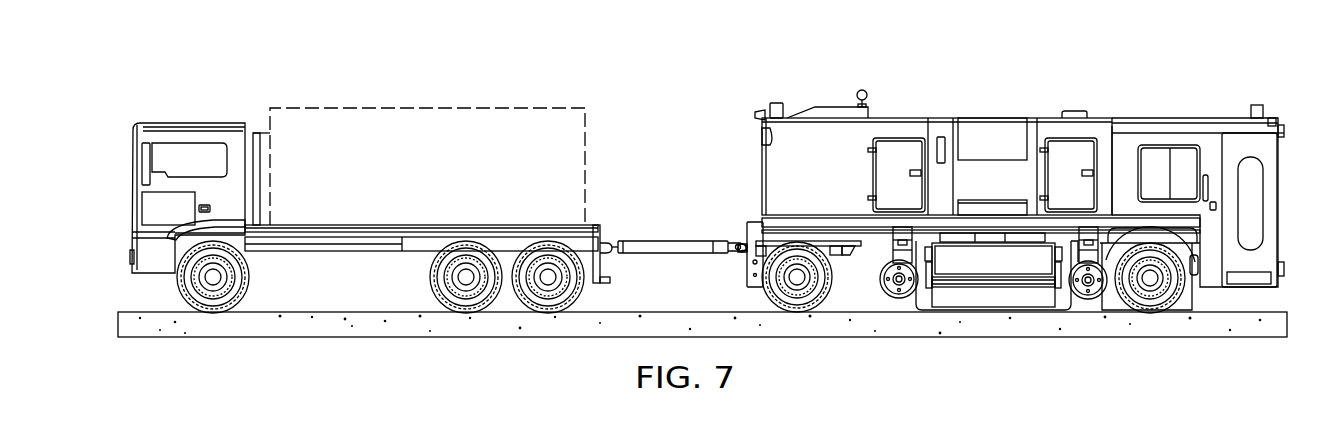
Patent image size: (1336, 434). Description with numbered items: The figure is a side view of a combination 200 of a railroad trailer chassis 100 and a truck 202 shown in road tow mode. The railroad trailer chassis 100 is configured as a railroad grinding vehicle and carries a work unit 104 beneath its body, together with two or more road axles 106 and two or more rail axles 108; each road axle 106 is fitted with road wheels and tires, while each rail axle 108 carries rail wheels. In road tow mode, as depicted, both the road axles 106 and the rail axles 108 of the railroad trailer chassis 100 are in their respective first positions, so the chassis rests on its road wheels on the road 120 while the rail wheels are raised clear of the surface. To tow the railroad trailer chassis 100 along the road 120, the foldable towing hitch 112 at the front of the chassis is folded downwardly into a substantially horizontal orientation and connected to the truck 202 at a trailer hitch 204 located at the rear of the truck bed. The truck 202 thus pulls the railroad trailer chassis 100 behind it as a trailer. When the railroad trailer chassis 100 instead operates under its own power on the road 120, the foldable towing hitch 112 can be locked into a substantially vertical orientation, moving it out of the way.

The railroad trailer chassis 100 is at (988, 211).
The work unit 104 is at (986, 308).
The road axles 106 is at (764, 304).
The rail axles 108 is at (917, 300).
The foldable towing hitch 112 is at (672, 238).
The road 120 is at (345, 338).
The combination 200 is at (988, 191).
The truck 202 is at (222, 105).
The trailer hitch 204 is at (608, 242).